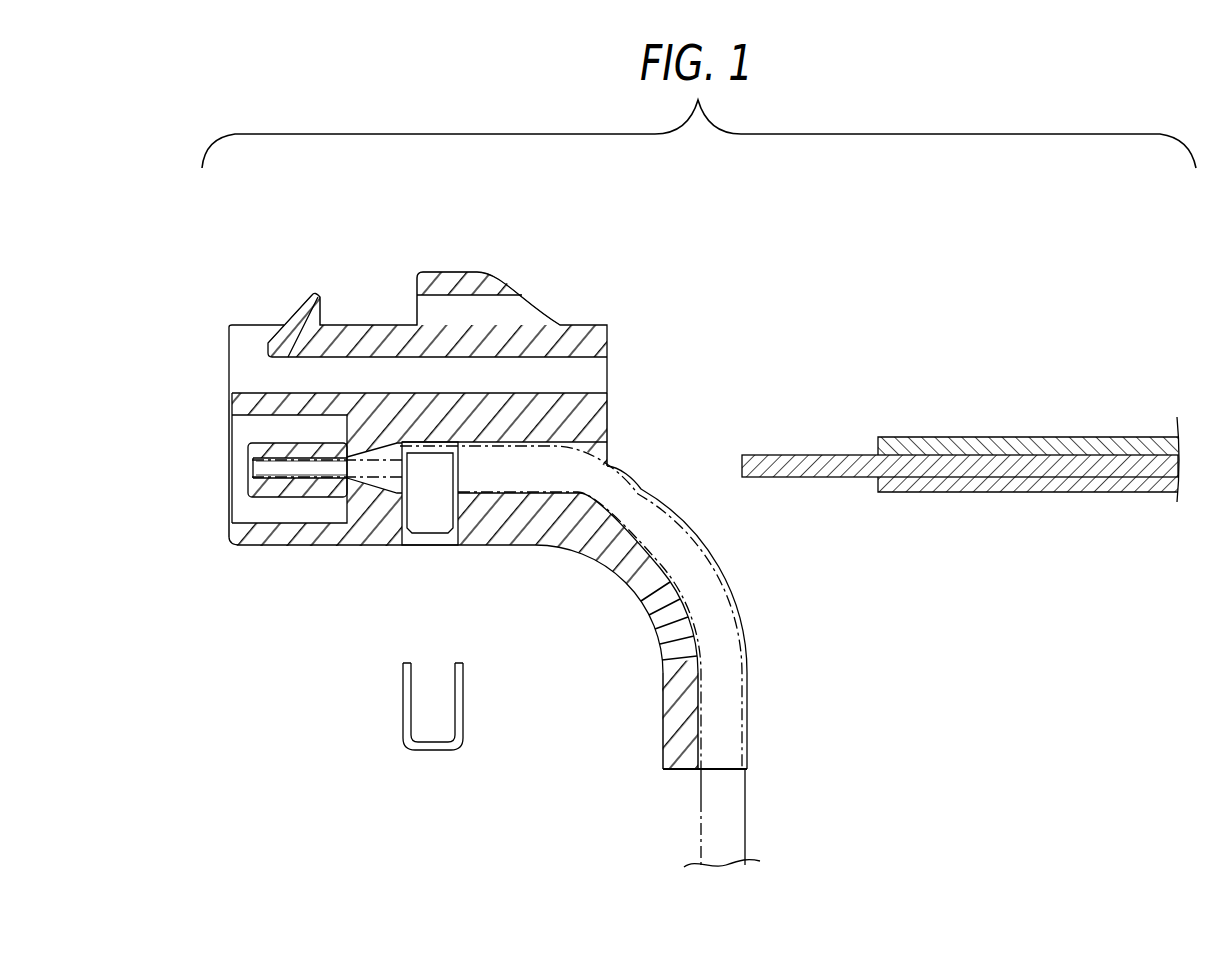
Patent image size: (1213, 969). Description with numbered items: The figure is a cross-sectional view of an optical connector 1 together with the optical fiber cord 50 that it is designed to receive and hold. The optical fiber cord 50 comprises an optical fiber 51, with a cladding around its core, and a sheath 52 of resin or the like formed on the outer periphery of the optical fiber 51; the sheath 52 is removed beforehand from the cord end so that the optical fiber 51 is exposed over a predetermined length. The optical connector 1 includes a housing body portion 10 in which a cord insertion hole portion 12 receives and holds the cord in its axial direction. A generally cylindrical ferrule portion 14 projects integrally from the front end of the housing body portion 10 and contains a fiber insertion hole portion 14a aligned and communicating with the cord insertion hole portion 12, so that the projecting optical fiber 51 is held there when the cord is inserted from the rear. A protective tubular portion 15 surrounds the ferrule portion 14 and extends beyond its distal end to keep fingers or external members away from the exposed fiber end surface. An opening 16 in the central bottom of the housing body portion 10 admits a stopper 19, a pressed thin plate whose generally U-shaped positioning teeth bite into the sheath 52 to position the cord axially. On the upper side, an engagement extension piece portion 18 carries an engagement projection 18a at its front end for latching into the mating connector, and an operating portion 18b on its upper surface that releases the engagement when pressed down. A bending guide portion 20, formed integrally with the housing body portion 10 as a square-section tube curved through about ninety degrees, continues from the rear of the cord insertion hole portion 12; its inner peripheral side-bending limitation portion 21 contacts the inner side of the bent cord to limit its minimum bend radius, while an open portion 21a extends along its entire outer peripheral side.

The optical connector 1 is at (444, 246).
The housing body portion 10 is at (363, 547).
The cord insertion hole portion 12 is at (608, 450).
The ferrule portion 14 is at (273, 442).
The fiber insertion hole portion 14a is at (252, 470).
The protective tubular portion 15 is at (242, 547).
The opening 16 is at (440, 545).
The engagement extension piece portion 18 is at (374, 325).
The engagement projection 18a is at (313, 294).
The operating portion 18b is at (477, 271).
The stopper 19 is at (430, 752).
The bending guide portion 20 is at (662, 700).
The inner peripheral side-bending limitation portion 21 is at (683, 771).
The open portion 21a is at (738, 593).
The optical fiber cord 50 is at (925, 373).
The optical fiber 51 is at (842, 453).
The sheath 52 is at (900, 437).